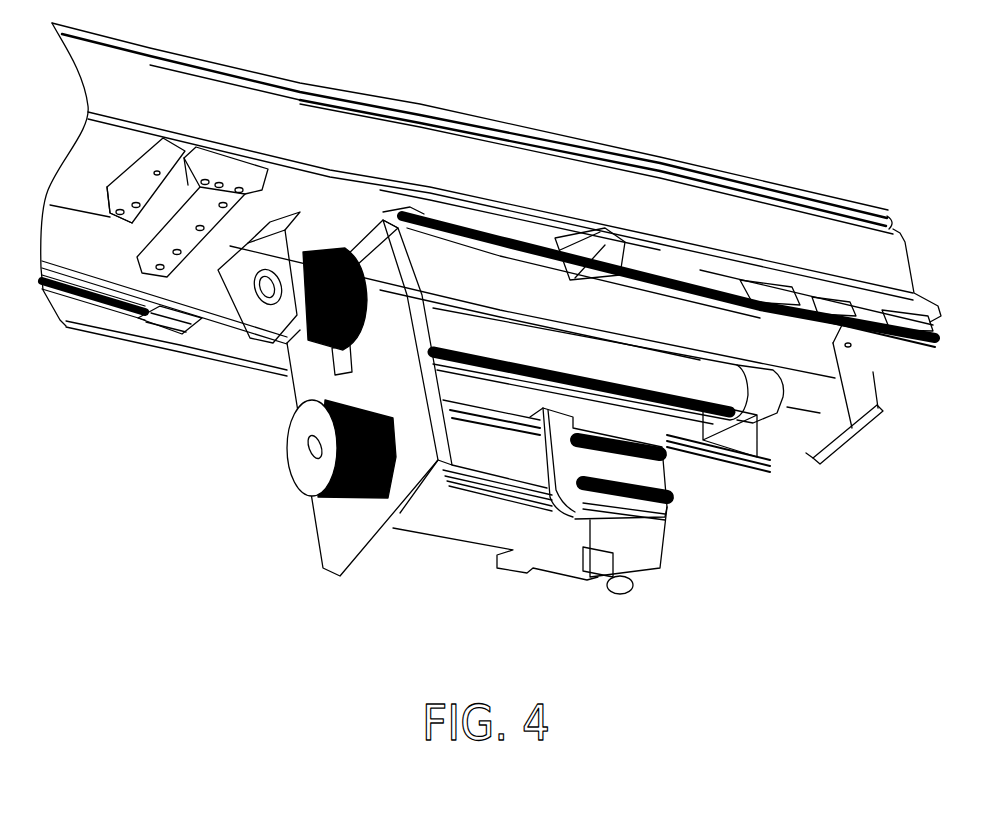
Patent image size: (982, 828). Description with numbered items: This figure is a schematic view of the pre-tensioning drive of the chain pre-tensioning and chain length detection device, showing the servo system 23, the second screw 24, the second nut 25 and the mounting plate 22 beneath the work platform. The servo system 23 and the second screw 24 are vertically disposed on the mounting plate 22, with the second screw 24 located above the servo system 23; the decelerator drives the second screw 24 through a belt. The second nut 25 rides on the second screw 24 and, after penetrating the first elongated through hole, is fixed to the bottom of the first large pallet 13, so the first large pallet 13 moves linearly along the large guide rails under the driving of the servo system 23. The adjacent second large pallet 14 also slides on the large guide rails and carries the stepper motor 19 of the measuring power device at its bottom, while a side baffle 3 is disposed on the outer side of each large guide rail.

The side baffle 3 is at (398, 165).
The first large pallet 13 is at (870, 303).
The second large pallet 14 is at (707, 270).
The stepper motor 19 is at (578, 233).
The mounting plate 22 is at (388, 370).
The servo system 23 is at (505, 465).
The second screw 24 is at (445, 458).
The second nut 25 is at (798, 362).